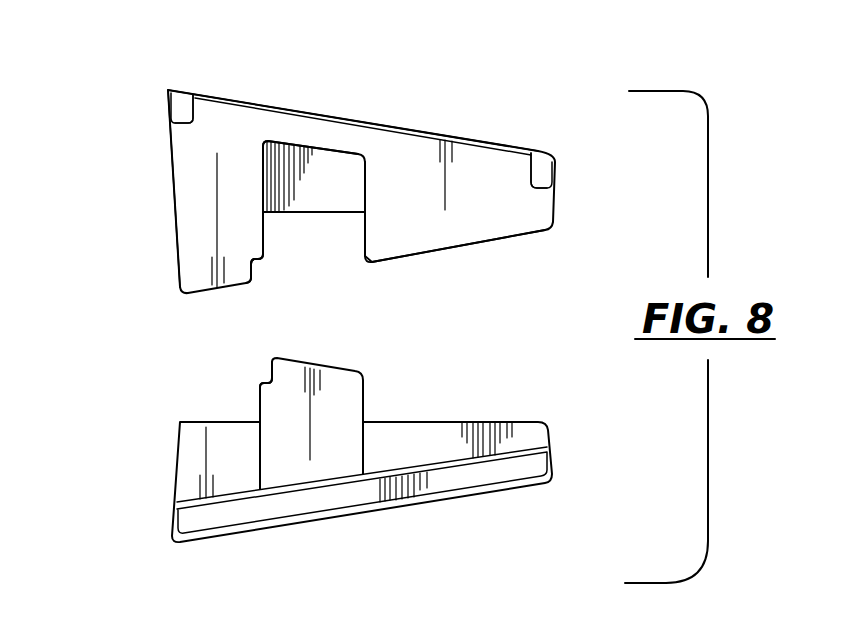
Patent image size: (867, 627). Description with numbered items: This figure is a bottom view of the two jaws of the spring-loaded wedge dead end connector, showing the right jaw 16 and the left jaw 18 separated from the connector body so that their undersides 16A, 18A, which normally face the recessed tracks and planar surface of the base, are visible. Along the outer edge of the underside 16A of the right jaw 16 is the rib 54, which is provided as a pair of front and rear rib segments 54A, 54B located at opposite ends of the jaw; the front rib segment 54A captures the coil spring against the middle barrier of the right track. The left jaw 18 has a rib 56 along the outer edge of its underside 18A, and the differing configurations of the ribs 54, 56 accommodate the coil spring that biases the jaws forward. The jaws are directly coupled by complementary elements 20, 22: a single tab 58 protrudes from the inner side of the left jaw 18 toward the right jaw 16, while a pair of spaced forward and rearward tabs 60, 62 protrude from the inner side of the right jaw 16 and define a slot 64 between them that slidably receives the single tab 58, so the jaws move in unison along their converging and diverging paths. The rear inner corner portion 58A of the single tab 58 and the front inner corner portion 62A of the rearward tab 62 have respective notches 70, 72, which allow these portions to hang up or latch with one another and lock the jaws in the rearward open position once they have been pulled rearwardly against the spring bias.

The right jaw 16 is at (417, 132).
The underside of right jaw 16A is at (320, 170).
The left jaw 18 is at (203, 520).
The underside of left jaw 18A is at (450, 433).
The complementary element 20 is at (465, 273).
The complementary element 22 is at (405, 397).
The rib 54 is at (181, 98).
The front rib segment 54A is at (548, 172).
The rear rib segment 54B is at (173, 108).
The rib 56 is at (408, 490).
The single tab 58 is at (329, 368).
The rear inner corner portion 58A is at (281, 397).
The forward tab 60 is at (416, 218).
The rearward tab 62 is at (195, 247).
The front inner corner portion 62A is at (232, 275).
The slot 64 is at (365, 227).
The notch 70 is at (268, 373).
The notch 72 is at (254, 271).